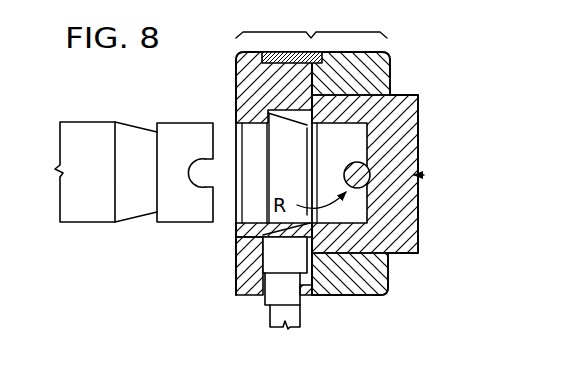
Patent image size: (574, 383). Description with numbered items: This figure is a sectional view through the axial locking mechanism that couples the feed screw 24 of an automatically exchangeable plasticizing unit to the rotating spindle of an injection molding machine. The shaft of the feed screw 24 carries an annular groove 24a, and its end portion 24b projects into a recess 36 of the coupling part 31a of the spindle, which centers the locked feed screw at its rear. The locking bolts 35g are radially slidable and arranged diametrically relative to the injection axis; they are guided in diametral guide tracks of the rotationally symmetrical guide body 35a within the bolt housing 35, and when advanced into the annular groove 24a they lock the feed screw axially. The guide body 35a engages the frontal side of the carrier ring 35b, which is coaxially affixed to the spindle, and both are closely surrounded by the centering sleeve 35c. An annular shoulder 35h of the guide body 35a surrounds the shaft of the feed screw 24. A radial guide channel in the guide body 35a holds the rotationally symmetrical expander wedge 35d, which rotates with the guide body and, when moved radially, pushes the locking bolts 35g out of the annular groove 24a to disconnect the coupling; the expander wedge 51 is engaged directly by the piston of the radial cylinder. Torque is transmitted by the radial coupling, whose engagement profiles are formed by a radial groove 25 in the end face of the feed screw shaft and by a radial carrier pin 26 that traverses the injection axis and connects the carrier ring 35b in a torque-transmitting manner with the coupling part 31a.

The feed screw 24 is at (90, 226).
The annular groove 24a is at (137, 155).
The end portion of shaft 24b is at (175, 202).
The radial groove 25 is at (206, 178).
The radial carrier pin 26 is at (366, 171).
The coupling part of the spindle 31a is at (395, 227).
The bolt housing 35 is at (327, 149).
The guide body 35a is at (253, 112).
The carrier ring 35b is at (368, 78).
The centering sleeve 35c is at (309, 297).
The expander wedge 35d is at (283, 280).
The locking bolts 35g is at (258, 111).
The annular shoulder 35h is at (261, 124).
The recess 36 is at (405, 92).
The expander wedge 51 is at (272, 315).